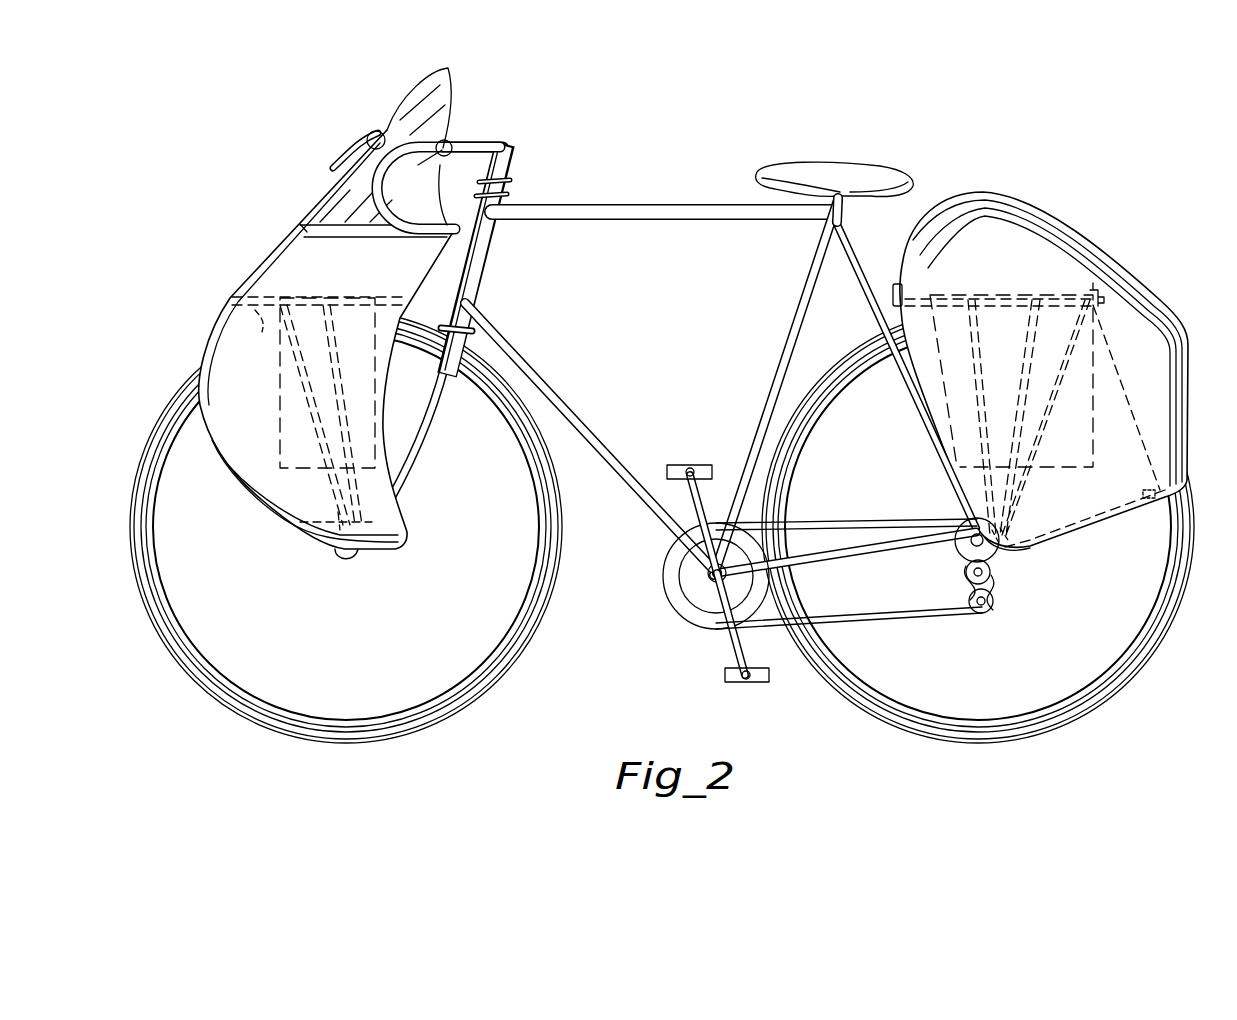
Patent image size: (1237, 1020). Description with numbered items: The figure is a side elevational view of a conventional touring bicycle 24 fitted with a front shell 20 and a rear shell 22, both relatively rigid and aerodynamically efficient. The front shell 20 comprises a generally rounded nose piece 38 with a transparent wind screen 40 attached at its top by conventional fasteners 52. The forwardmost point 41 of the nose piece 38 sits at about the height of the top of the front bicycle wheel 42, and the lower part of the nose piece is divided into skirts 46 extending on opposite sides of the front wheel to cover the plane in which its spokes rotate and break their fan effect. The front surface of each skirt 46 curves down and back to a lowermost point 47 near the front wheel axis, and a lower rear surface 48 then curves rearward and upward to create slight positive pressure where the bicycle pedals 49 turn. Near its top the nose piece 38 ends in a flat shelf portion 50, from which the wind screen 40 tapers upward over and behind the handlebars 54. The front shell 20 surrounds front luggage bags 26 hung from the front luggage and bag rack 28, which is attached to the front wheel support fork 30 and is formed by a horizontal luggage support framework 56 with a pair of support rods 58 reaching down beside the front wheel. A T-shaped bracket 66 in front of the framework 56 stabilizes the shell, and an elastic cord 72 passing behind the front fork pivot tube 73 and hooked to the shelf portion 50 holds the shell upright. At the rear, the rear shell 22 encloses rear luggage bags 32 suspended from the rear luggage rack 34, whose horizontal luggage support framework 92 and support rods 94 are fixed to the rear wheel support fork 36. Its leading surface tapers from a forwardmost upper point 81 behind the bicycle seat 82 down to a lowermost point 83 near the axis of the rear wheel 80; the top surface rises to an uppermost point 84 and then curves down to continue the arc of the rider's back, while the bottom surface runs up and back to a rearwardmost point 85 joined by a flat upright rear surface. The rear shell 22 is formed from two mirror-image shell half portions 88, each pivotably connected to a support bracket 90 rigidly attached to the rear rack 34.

The front shell 20 is at (300, 361).
The rear shell 22 is at (1046, 373).
The touring bicycle 24 is at (708, 359).
The front luggage bags 26 is at (278, 418).
The front luggage and bag rack 28 is at (392, 300).
The front wheel support fork 30 is at (422, 432).
The rear luggage bags 32 is at (1092, 414).
The rear luggage rack 34 is at (918, 300).
The rear wheel support fork 36 is at (947, 478).
The nose piece 38 is at (216, 330).
The wind screen 40 is at (404, 112).
The forwardmost point 41 is at (200, 385).
The front bicycle wheel 42 is at (503, 664).
The skirts 46 is at (242, 483).
The lowermost point 47 is at (360, 552).
The lower rear surface 48 is at (400, 541).
The bicycle pedals 49 is at (724, 676).
The shelf portion 50 is at (335, 216).
The fasteners 52 is at (302, 228).
The handlebars 54 is at (420, 152).
The luggage support framework 56 is at (312, 292).
The support rods 58 is at (338, 488).
The T-shaped bracket 66 is at (262, 316).
The elastic cord 72 is at (476, 232).
The front fork pivot tube 73 is at (473, 262).
The rear wheel 80 is at (1140, 658).
The forwardmost upper point 81 is at (895, 290).
The bicycle seat 82 is at (836, 176).
The lowermost point 83 is at (1003, 548).
The uppermost point 84 is at (980, 192).
The rearwardmost point 85 is at (1190, 483).
The shell half portions 88 is at (1190, 330).
The support bracket 90 is at (1130, 482).
The horizontal luggage support framework 92 is at (1012, 298).
The support rods 94 is at (1012, 497).